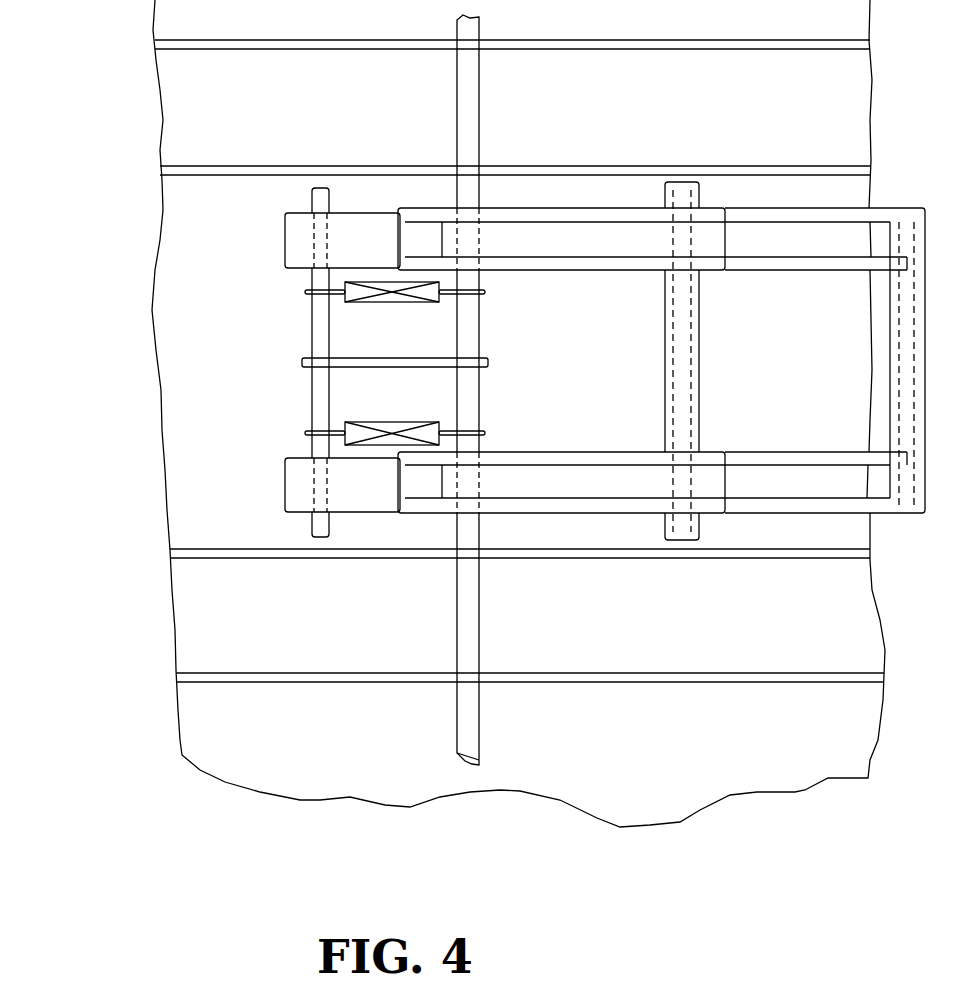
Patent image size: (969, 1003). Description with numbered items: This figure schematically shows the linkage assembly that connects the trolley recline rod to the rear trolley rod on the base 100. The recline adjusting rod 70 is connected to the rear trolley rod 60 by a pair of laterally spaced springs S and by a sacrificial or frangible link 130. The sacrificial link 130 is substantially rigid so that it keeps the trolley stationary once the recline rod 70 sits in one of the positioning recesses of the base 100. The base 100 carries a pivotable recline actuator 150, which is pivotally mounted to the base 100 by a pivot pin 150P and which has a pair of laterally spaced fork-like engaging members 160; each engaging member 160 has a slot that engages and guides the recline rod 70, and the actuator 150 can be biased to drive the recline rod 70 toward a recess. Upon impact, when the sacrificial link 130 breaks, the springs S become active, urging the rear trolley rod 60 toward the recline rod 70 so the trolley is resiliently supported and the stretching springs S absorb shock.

The base 100 is at (705, 761).
The rear trolley rod 60 is at (542, 390).
The recline adjusting rod 70 is at (279, 415).
The sacrificial link 130 is at (453, 336).
The recline actuator 150 is at (661, 360).
The pivot pin 150P is at (754, 422).
The engaging members 160 is at (220, 400).
The springs S is at (280, 363).